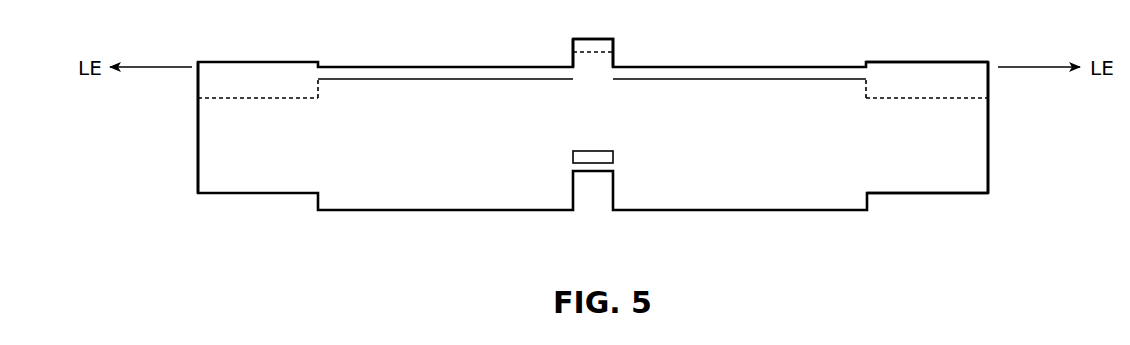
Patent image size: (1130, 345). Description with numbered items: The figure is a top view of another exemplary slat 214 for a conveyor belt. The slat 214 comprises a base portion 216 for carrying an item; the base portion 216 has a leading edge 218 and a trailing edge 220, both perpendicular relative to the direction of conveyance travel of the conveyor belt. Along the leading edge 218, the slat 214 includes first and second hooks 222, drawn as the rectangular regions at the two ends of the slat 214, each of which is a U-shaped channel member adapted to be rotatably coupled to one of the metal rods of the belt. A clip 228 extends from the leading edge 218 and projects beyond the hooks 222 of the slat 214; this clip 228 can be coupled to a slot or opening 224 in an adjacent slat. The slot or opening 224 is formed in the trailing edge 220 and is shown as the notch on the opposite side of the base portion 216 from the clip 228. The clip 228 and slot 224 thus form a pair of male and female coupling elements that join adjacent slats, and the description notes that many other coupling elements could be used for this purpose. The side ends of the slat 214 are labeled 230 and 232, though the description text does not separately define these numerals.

The slat 214 is at (1017, 211).
The base portion 216 is at (797, 149).
The leading edge 218 is at (930, 62).
The trailing edge 220 is at (925, 194).
The hooks 222 is at (198, 82).
The slot or opening 224 is at (627, 161).
The clip 228 is at (626, 57).
The left end 230 is at (198, 164).
The right end 232 is at (988, 163).